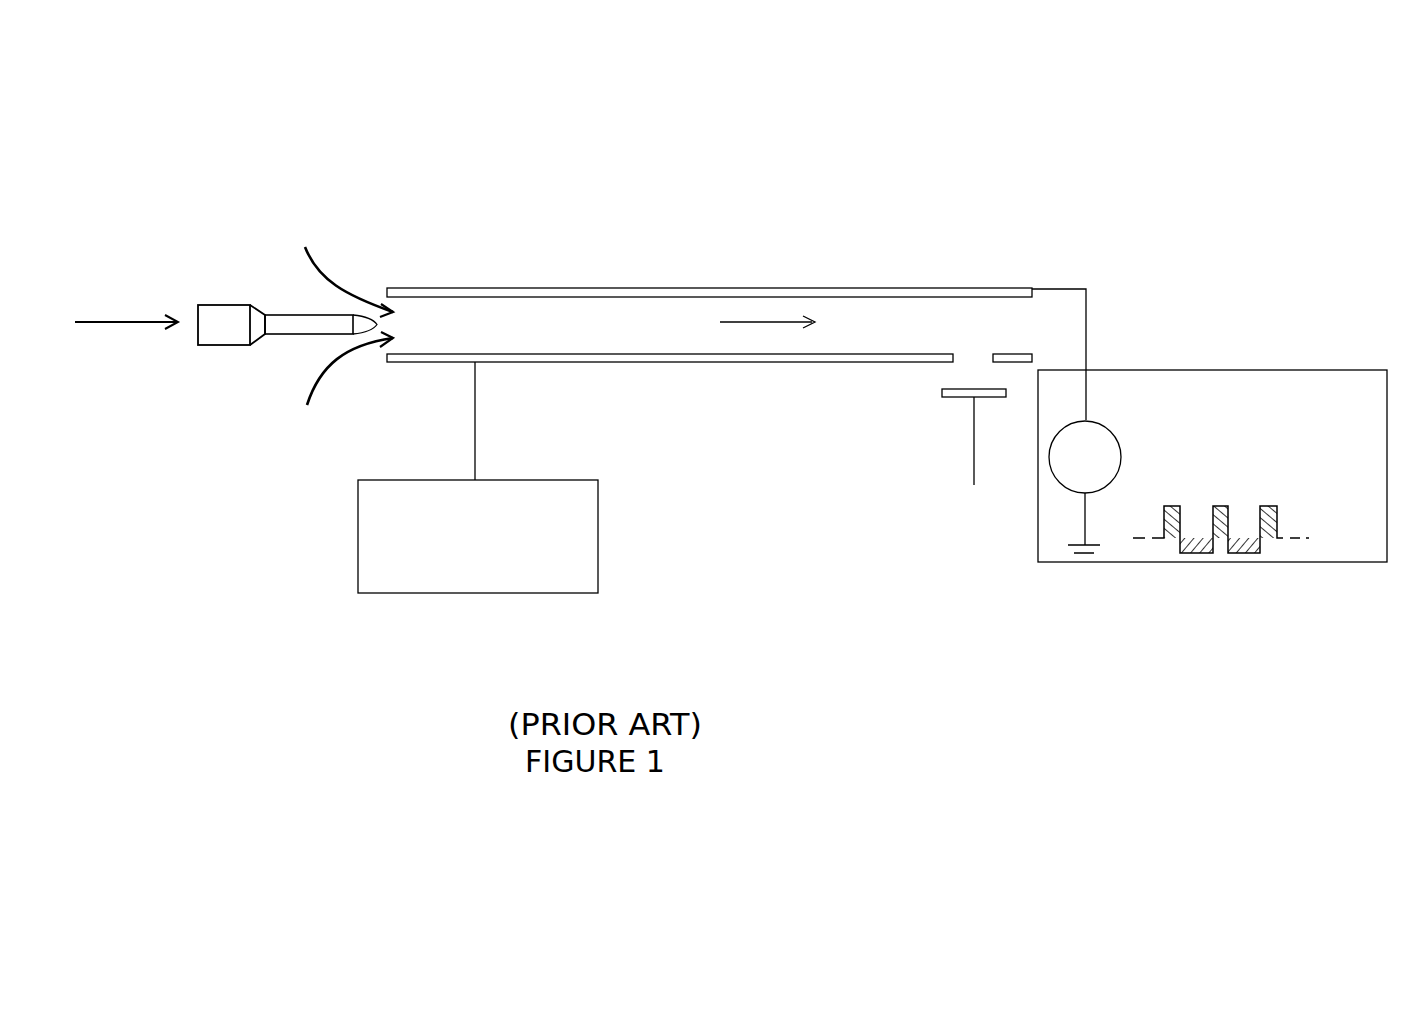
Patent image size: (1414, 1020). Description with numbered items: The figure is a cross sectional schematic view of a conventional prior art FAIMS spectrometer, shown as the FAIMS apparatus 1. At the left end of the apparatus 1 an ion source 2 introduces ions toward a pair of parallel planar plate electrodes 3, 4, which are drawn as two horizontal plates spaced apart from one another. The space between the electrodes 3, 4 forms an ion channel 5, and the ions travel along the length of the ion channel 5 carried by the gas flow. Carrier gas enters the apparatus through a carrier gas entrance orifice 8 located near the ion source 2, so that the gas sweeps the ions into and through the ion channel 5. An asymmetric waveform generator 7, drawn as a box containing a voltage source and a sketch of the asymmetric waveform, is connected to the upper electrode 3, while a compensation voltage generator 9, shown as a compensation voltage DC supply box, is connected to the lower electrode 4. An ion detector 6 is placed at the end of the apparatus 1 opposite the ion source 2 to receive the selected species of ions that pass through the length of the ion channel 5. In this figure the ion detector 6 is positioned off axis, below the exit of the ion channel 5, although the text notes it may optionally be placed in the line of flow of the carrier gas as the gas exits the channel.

The FAIMS apparatus 1 is at (1011, 213).
The ion source 2 is at (260, 306).
The parallel planar plate electrode 3 is at (676, 288).
The parallel planar plate electrode 4 is at (643, 363).
The ion channel 5 is at (522, 322).
The ion detector 6 is at (955, 398).
The asymmetric waveform generator 7 is at (1100, 423).
The carrier gas entrance orifice 8 is at (393, 342).
The compensation voltage generator 9 is at (553, 577).